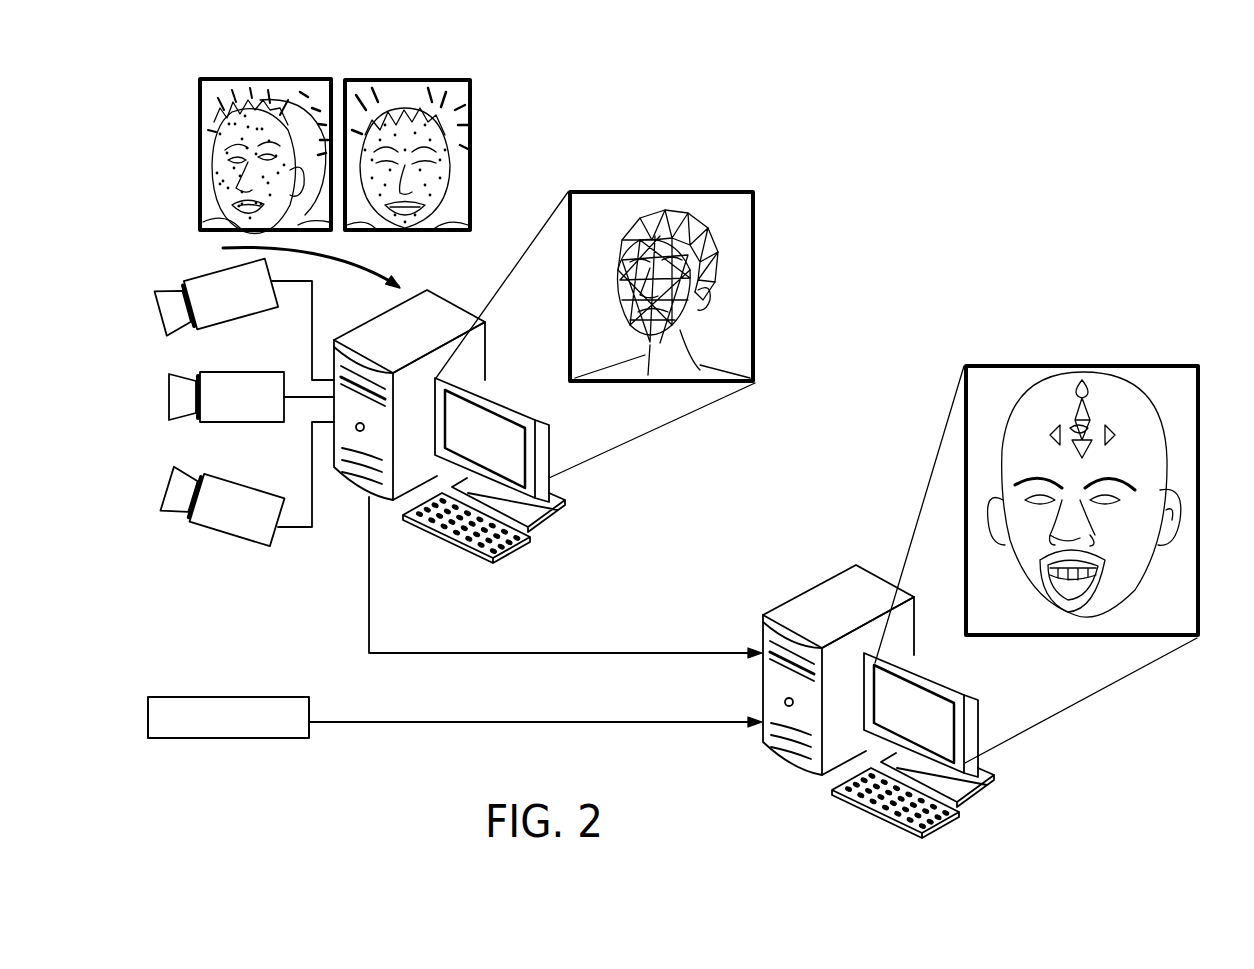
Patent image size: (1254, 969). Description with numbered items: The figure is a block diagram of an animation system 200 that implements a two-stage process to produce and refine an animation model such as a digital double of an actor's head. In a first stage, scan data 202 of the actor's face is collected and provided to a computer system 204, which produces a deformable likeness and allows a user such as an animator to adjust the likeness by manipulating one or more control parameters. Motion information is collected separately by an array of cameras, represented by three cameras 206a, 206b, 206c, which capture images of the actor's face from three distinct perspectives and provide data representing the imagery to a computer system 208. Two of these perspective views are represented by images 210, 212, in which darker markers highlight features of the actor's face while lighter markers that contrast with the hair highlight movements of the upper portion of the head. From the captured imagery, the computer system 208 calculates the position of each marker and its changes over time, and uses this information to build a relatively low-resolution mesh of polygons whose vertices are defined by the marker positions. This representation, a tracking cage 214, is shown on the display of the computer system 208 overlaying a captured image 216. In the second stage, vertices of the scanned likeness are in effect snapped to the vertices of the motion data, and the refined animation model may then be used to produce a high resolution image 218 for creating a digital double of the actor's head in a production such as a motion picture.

The animation system 200 is at (1105, 170).
The scan data 202 is at (190, 697).
The computer system 204 is at (851, 622).
The camera 206a is at (244, 319).
The camera 206b is at (251, 397).
The camera 206c is at (247, 484).
The computer system 208 is at (548, 474).
The image 210 is at (198, 89).
The image 212 is at (472, 88).
The tracking cage 214 is at (568, 331).
The captured image 216 is at (755, 203).
The high resolution image 218 is at (1148, 364).